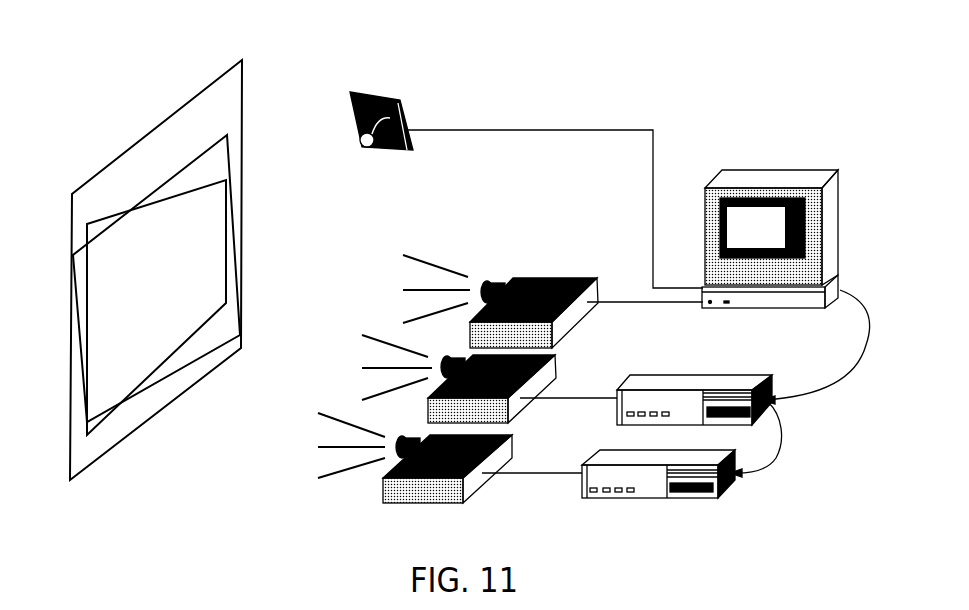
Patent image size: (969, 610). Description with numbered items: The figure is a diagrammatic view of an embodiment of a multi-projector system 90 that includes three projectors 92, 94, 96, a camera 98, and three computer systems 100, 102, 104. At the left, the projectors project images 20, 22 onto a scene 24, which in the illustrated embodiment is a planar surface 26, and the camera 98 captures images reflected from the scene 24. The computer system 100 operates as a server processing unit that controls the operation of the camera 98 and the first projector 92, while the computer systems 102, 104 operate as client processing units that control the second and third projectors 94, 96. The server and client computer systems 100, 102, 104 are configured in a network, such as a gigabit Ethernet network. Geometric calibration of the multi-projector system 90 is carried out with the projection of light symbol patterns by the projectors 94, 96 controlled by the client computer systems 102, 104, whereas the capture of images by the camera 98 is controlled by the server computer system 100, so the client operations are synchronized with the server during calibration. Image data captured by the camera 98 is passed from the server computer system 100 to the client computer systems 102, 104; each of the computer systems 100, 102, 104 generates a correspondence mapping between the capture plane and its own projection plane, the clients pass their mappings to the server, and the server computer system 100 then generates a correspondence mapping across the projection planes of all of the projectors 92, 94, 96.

The image 20 is at (178, 347).
The image 22 is at (165, 179).
The scene 24 is at (139, 304).
The planar surface 26 is at (179, 107).
The multi-projector system 90 is at (750, 53).
The first projector 92 is at (552, 283).
The second projector 94 is at (550, 368).
The third projector 96 is at (505, 453).
The camera 98 is at (400, 107).
The server computer system 100 is at (815, 173).
The client computer system 102 is at (713, 377).
The client computer system 104 is at (712, 497).